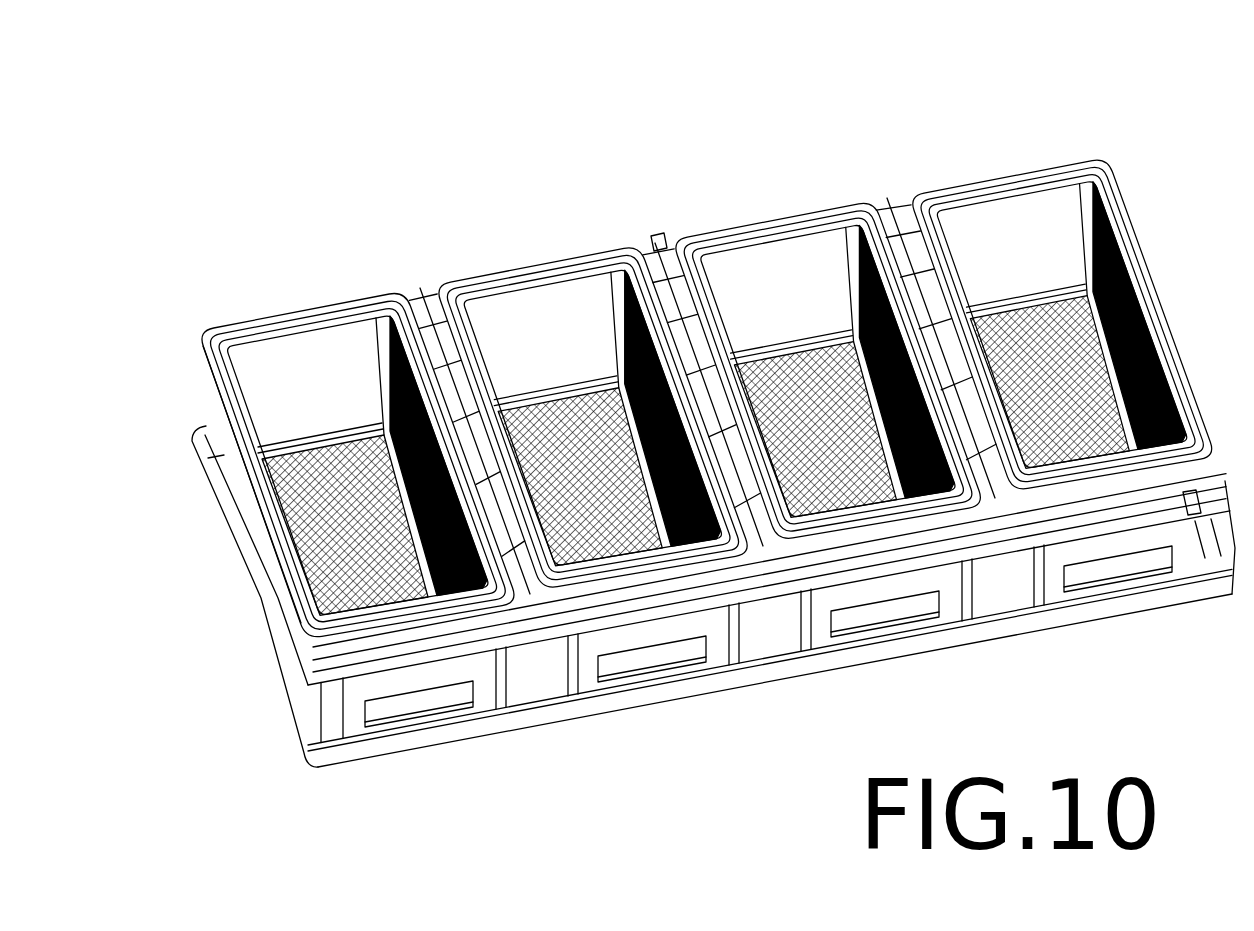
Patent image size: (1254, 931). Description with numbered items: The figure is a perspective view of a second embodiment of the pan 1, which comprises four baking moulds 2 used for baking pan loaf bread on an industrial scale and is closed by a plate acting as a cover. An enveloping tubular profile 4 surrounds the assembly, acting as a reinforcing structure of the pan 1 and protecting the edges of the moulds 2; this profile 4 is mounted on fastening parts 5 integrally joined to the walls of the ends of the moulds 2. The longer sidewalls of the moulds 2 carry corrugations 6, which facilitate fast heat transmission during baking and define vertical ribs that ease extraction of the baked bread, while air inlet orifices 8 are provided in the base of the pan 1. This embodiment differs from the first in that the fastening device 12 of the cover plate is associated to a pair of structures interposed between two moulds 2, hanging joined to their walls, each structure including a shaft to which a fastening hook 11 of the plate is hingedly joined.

The pan 1 is at (283, 243).
The baking moulds 2 is at (330, 372).
The enveloping tubular profile 4 is at (262, 638).
The fastening parts 5 is at (423, 693).
The corrugations 6 is at (836, 212).
The air inlet orifices 8 is at (278, 522).
The fastening hook 11 is at (662, 238).
The fastening device 12 is at (637, 247).